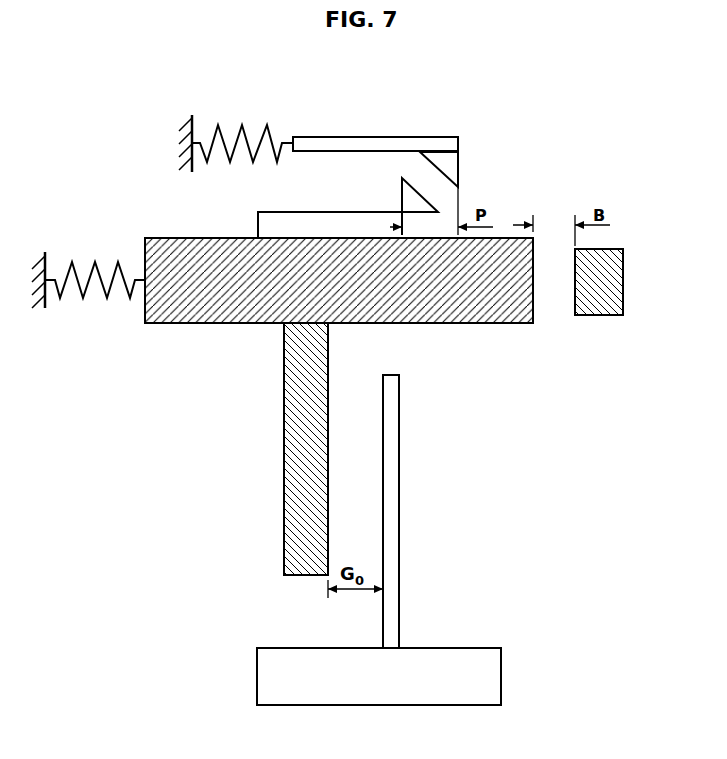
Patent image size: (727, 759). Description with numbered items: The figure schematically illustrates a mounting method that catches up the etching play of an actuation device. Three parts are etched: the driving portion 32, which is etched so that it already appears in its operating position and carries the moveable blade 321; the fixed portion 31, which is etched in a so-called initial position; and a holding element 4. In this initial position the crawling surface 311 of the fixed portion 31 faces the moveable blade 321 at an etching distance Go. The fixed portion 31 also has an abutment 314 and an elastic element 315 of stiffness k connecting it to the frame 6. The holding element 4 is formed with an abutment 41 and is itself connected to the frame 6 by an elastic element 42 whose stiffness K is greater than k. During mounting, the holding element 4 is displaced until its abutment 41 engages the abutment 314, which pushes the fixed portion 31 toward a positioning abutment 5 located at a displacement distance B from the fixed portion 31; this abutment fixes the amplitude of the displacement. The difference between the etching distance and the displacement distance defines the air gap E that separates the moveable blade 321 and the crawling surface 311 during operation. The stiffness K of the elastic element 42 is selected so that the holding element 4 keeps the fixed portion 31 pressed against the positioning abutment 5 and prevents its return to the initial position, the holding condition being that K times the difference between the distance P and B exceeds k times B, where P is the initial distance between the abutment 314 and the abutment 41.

The holding element 4 is at (377, 137).
The abutment 41 is at (461, 168).
The elastic element 42 is at (230, 165).
The frame 6 is at (199, 120).
The positioning abutment 5 is at (616, 280).
The fixed portion 31 is at (203, 394).
The crawling surface 311 is at (296, 450).
The abutment 314 is at (400, 196).
The elastic element 315 is at (83, 298).
The driving portion 32 is at (480, 550).
The moveable blade 321 is at (392, 512).